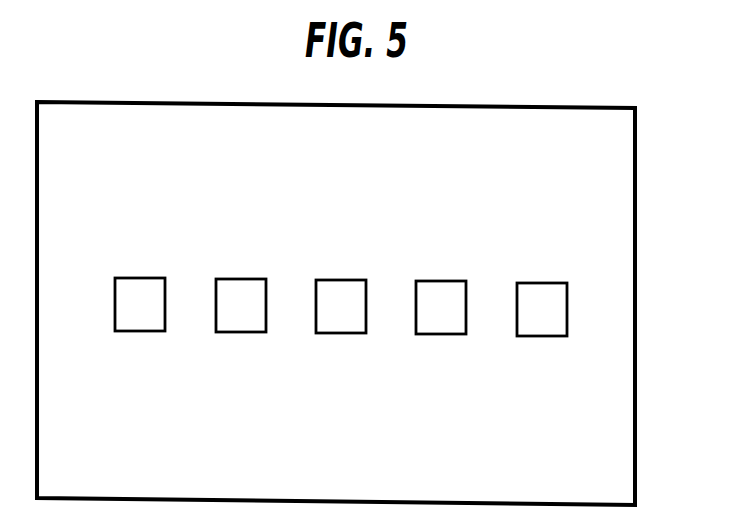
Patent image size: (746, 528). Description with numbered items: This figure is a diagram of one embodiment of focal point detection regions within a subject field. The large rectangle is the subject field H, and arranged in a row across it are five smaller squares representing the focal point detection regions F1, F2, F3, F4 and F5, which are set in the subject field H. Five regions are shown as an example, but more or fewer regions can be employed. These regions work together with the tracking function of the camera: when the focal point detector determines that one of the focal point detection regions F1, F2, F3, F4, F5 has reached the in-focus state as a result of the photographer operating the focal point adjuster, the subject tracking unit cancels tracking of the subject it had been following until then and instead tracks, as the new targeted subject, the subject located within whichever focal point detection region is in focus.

The subject field H is at (637, 283).
The focal point detection region F1 is at (140, 331).
The focal point detection region F2 is at (241, 332).
The focal point detection region F3 is at (341, 333).
The focal point detection region F4 is at (441, 334).
The focal point detection region F5 is at (542, 336).